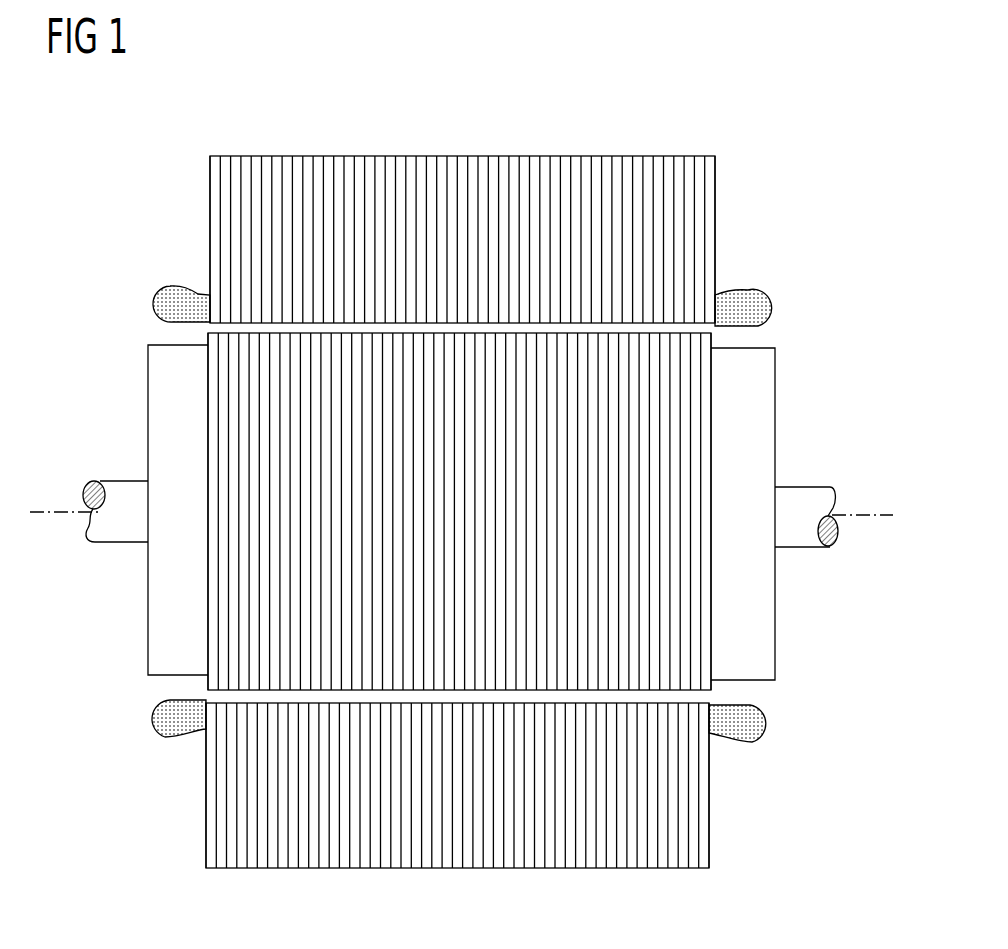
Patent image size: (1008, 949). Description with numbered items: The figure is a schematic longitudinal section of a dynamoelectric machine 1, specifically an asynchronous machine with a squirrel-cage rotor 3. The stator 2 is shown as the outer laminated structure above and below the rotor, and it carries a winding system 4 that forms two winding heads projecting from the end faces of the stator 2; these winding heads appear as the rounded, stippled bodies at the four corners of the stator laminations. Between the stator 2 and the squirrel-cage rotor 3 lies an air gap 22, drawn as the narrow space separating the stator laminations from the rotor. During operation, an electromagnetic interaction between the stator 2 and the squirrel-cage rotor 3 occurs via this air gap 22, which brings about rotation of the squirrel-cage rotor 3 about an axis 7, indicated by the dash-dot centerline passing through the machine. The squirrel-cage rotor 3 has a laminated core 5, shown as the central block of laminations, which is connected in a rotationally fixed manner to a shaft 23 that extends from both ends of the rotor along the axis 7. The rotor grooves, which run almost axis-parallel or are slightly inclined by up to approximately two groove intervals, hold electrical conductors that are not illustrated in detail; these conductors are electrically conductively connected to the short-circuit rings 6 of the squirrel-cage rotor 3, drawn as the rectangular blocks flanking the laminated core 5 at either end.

The dynamoelectric machine 1 is at (635, 113).
The stator 2 is at (710, 808).
The squirrel-cage rotor 3 is at (263, 331).
The winding system 4 is at (167, 745).
The laminated core 5 is at (667, 332).
The short-circuit rings 6 is at (148, 390).
The axis 7 is at (877, 513).
The air gap 22 is at (702, 693).
The shaft 23 is at (117, 545).